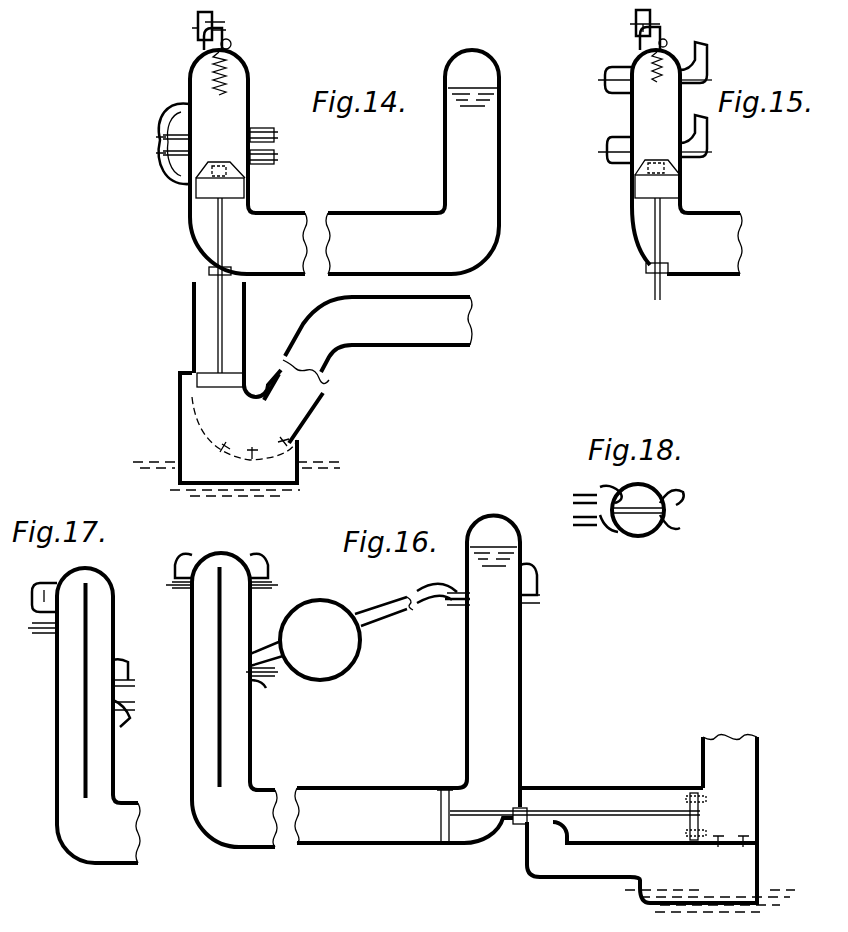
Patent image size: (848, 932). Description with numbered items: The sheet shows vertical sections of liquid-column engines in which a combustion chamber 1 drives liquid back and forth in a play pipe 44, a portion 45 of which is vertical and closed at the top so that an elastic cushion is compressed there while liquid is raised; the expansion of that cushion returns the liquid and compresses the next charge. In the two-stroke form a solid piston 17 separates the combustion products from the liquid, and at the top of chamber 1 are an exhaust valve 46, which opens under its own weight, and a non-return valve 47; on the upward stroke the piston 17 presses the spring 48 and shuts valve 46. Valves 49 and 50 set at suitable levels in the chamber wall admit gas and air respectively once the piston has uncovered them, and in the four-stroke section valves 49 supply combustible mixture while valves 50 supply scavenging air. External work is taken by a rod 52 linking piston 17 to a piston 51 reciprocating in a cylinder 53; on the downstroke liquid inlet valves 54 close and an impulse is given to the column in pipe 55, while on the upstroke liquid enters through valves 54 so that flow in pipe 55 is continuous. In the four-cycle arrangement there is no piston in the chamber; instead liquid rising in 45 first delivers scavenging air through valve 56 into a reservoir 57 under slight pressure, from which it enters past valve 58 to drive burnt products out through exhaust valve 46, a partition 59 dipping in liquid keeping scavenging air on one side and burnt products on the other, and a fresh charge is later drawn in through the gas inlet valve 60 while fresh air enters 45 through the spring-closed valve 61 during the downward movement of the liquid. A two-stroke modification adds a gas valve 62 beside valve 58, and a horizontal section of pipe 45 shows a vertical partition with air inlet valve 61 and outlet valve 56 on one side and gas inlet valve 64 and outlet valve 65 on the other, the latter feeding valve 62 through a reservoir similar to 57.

In FIG. 14, the combustion chamber 1 is at (248, 162).
In FIG. 15, the combustion chamber 1 is at (687, 162).
In FIG. 17, the combustion chamber 1 is at (98, 715).
In FIG. 16, the combustion chamber 1 is at (234, 687).
In FIG. 14, the solid piston 17 is at (245, 192).
In FIG. 15, the solid piston 17 is at (682, 191).
In FIG. 16, the solid piston 17 is at (445, 845).
In FIG. 14, the pipe 44 is at (383, 232).
In FIG. 16, the pipe 44 is at (526, 806).
In FIG. 14, the vertical portion of pipe 45 is at (472, 120).
In FIG. 16, the vertical portion of pipe 45 is at (493, 662).
In FIG. 18, the vertical portion of pipe 45 is at (638, 525).
In FIG. 14, the exhaust valve 46 is at (230, 44).
In FIG. 15, the exhaust valve 46 is at (640, 44).
In FIG. 17, the exhaust valve 46 is at (58, 637).
In FIG. 16, the exhaust valve 46 is at (198, 585).
In FIG. 14, the non-return valve 47 is at (196, 22).
In FIG. 15, the non-return valve 47 is at (636, 21).
In FIG. 14, the spring 48 is at (228, 80).
In FIG. 14, the gas inlet valve 49 is at (232, 131).
In FIG. 15, the gas inlet valve 49 is at (680, 85).
In FIG. 14, the air inlet valve 50 is at (231, 150).
In FIG. 15, the air inlet valve 50 is at (680, 152).
In FIG. 14, the piston 51 is at (198, 381).
In FIG. 16, the piston 51 is at (700, 811).
In FIG. 14, the rod 52 is at (217, 314).
In FIG. 15, the rod 52 is at (655, 293).
In FIG. 16, the rod 52 is at (583, 820).
In FIG. 14, the cylinder 53 is at (236, 334).
In FIG. 14, the liquid inlet valves 54 is at (283, 441).
In FIG. 16, the liquid inlet valves 54 is at (743, 848).
In FIG. 14, the pipe 55 is at (368, 370).
In FIG. 16, the pipe 55 is at (642, 819).
In FIG. 16, the air outlet valve 56 is at (462, 600).
In FIG. 18, the air outlet valve 56 is at (616, 490).
In FIG. 16, the reservoir 57 is at (331, 638).
In FIG. 17, the scavenging air valve 58 is at (112, 668).
In FIG. 16, the scavenging air valve 58 is at (250, 678).
In FIG. 17, the partition 59 is at (90, 622).
In FIG. 16, the partition 59 is at (215, 646).
In FIG. 16, the gas inlet valve 60 is at (272, 585).
In FIG. 16, the air inlet valve 61 is at (540, 599).
In FIG. 18, the air inlet valve 61 is at (662, 492).
In FIG. 17, the gas valve 62 is at (112, 728).
In FIG. 18, the gas inlet valve 64 is at (657, 532).
In FIG. 18, the gas outlet valve 65 is at (617, 532).